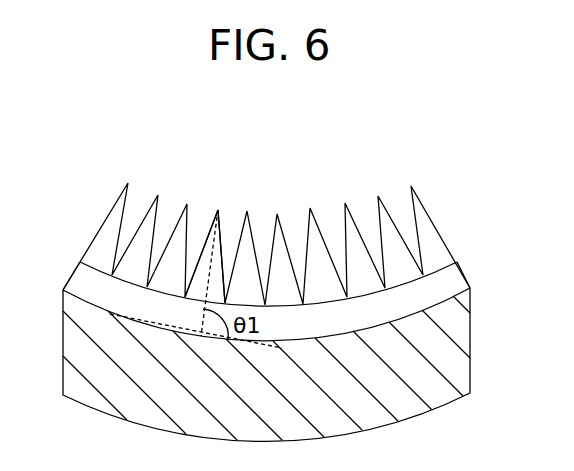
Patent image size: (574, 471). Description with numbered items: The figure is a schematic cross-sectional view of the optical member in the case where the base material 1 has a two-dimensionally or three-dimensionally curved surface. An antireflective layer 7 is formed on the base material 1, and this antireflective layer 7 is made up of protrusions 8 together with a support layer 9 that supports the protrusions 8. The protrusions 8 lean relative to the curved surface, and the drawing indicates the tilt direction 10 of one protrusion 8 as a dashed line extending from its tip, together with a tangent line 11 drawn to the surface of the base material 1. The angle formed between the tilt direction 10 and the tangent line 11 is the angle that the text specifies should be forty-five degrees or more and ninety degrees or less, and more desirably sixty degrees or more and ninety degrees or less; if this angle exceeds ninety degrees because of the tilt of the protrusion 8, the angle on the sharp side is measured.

The base material 1 is at (460, 342).
The antireflective layer 7 is at (305, 244).
The protrusions 8 is at (430, 231).
The support layer 9 is at (453, 278).
The tilt direction 10 is at (223, 250).
The tangent line 11 is at (141, 324).